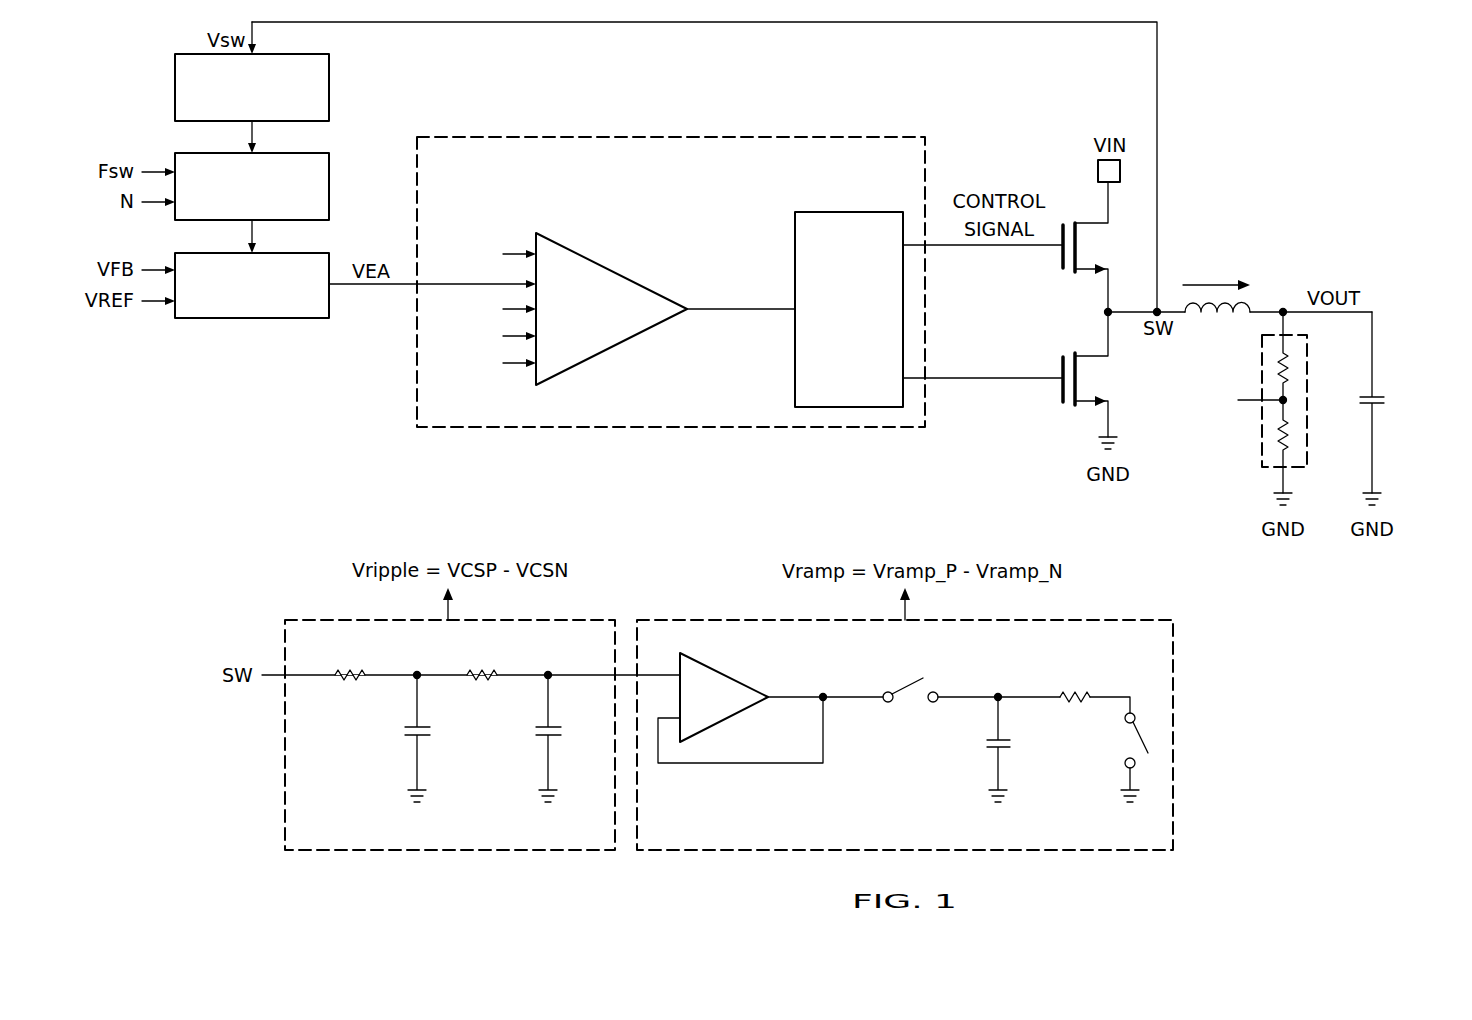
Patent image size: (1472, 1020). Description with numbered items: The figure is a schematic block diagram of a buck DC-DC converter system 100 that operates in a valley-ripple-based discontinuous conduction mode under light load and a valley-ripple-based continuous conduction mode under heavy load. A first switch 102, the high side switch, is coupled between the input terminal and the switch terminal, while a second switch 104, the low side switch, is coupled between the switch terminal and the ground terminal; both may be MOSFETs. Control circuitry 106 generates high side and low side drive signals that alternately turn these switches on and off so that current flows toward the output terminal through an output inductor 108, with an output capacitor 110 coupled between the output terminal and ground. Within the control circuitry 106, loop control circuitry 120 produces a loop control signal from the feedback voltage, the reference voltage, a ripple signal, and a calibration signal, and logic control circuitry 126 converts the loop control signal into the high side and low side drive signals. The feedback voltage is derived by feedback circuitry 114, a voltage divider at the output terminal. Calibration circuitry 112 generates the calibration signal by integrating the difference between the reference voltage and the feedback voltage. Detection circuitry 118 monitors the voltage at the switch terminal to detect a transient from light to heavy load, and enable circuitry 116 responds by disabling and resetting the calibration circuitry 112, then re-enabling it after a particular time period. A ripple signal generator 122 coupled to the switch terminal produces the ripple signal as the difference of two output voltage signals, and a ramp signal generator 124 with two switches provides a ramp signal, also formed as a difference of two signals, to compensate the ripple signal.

The DC-DC converter system 100 is at (1289, 111).
The first switch 102 is at (1062, 258).
The second switch 104 is at (1062, 390).
The control circuitry 106 is at (628, 128).
The output inductor 108 is at (1253, 303).
The output capacitor 110 is at (1385, 402).
The calibration circuitry 112 is at (242, 318).
The feedback circuitry 114 is at (1254, 416).
The enable circuitry 116 is at (329, 183).
The detection circuitry 118 is at (175, 88).
The loop control circuitry 120 is at (622, 323).
The ripple signal generator 122 is at (278, 764).
The ramp signal generator 124 is at (1182, 764).
The logic control circuitry 126 is at (847, 212).